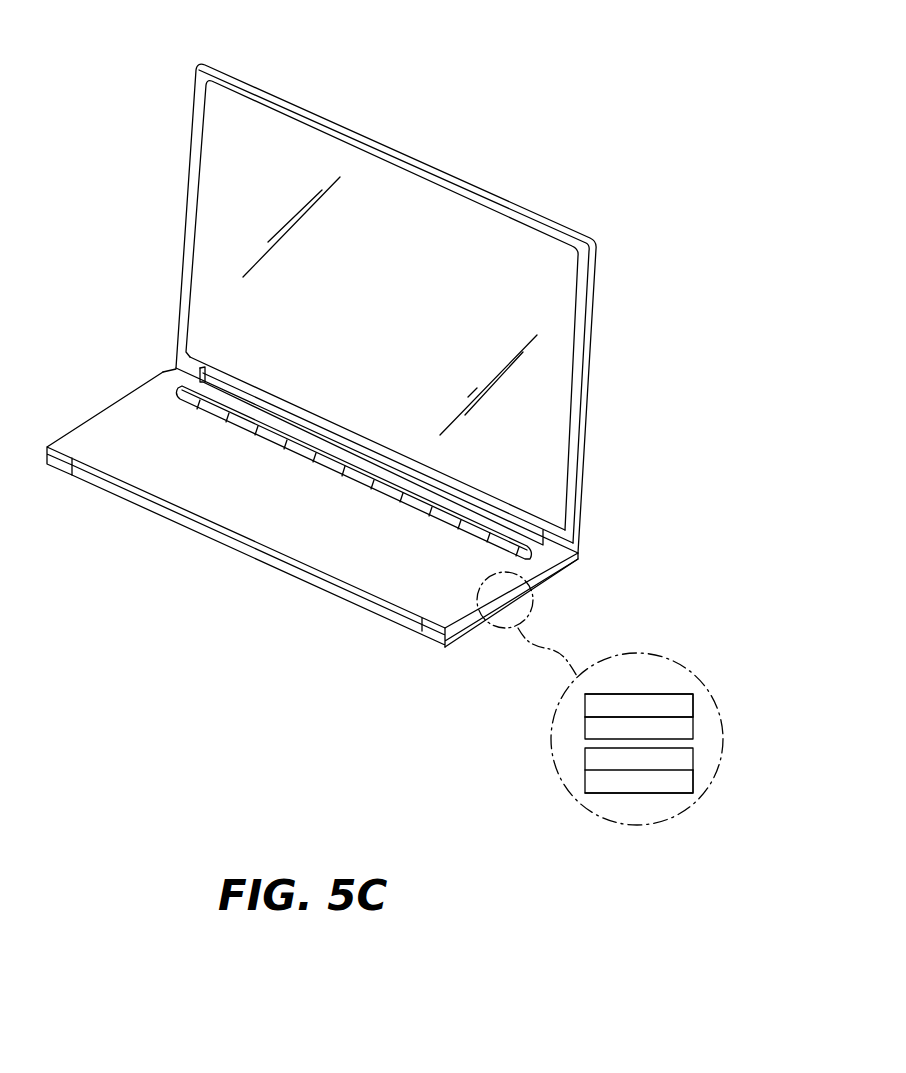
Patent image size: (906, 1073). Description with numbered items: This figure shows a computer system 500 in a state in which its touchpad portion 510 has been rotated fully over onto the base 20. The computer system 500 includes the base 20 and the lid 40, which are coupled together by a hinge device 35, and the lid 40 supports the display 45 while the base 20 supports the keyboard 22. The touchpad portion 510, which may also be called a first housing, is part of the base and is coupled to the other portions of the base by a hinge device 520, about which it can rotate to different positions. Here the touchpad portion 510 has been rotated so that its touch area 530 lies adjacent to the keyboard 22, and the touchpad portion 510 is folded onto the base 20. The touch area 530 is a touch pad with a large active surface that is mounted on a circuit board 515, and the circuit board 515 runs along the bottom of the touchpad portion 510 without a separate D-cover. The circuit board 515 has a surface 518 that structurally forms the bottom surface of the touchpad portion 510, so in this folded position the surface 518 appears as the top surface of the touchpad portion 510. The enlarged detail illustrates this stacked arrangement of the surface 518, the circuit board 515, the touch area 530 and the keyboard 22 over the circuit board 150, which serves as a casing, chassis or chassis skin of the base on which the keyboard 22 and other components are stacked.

The computer system 500 is at (125, 53).
The lid 40 is at (192, 139).
The display 45 is at (398, 309).
The base 20 is at (165, 369).
The keyboard 22 is at (218, 400).
The hinge device 35 is at (357, 448).
The touchpad portion 510 is at (88, 413).
The hinge device 520 is at (347, 600).
The surface 518 is at (660, 694).
The circuit board 515 is at (693, 705).
The touch area 530 is at (693, 727).
The circuit board 150 is at (693, 782).